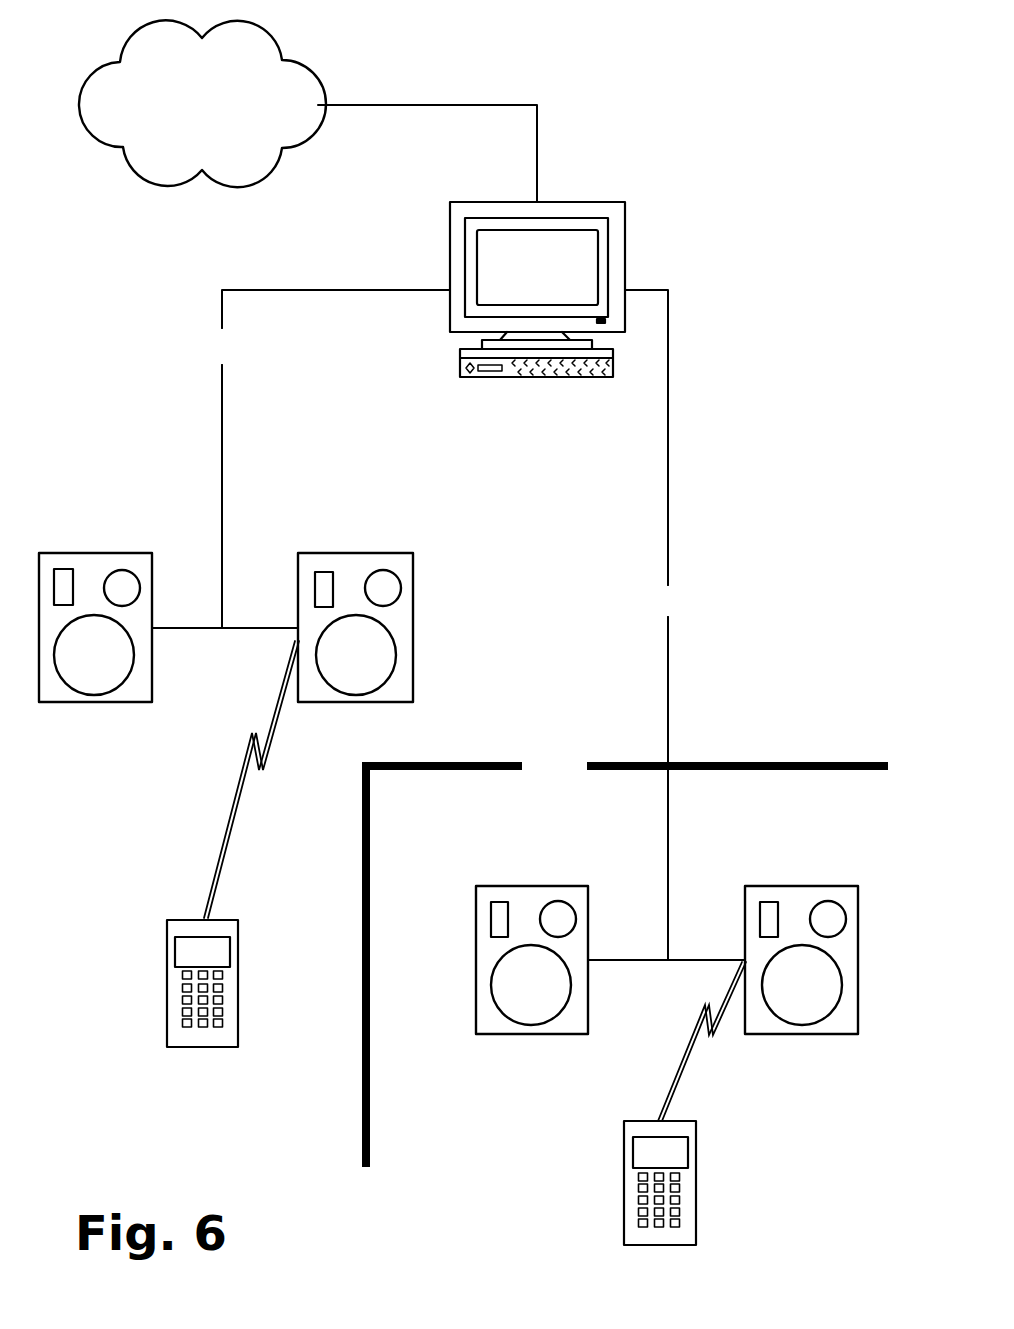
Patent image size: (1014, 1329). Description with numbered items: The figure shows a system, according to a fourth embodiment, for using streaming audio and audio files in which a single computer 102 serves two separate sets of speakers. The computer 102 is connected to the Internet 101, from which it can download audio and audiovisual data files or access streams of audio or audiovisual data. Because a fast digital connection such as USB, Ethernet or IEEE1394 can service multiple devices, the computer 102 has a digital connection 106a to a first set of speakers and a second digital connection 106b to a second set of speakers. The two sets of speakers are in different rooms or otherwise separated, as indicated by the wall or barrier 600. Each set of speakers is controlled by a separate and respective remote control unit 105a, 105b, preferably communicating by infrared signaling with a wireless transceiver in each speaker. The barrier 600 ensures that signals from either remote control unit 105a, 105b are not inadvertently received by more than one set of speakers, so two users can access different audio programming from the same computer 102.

The Internet 101 is at (202, 103).
The computer 102 is at (537, 302).
The remote control unit 105a is at (182, 930).
The remote control unit 105b is at (640, 1130).
The digital connection 106a is at (223, 350).
The second digital connection 106b is at (669, 600).
The wall or barrier 600 is at (627, 961).